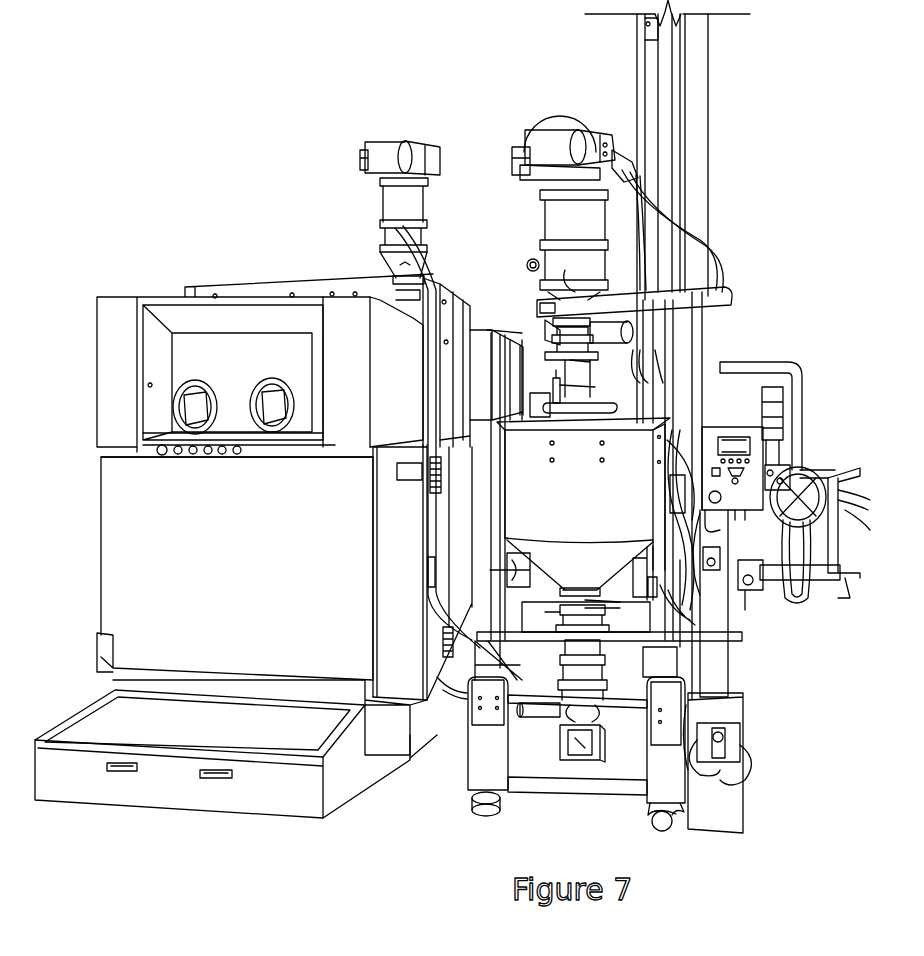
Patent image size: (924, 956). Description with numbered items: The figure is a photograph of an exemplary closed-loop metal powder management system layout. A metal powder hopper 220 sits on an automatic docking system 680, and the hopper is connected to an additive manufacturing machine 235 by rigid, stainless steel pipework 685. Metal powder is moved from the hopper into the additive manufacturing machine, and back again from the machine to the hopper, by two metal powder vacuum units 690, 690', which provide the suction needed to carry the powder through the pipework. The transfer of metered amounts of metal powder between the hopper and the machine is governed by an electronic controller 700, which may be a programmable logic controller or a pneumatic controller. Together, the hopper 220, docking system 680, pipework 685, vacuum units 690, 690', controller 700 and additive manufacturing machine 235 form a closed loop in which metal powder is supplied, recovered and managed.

The additive manufacturing machine 235 is at (226, 555).
The rigid, stainless steel pipework 685 is at (433, 350).
The metal powder vacuum unit 690 is at (444, 178).
The metal powder vacuum unit 690' is at (575, 235).
The metal powder hopper 220 is at (603, 512).
The electronic controller 700 is at (740, 432).
The automatic docking system 680 is at (663, 714).